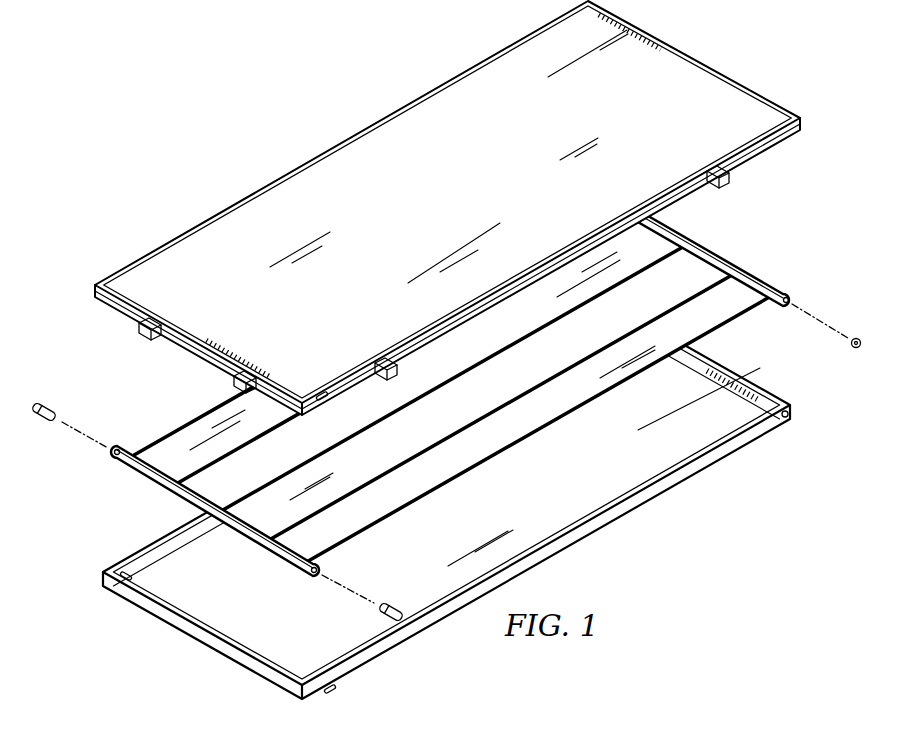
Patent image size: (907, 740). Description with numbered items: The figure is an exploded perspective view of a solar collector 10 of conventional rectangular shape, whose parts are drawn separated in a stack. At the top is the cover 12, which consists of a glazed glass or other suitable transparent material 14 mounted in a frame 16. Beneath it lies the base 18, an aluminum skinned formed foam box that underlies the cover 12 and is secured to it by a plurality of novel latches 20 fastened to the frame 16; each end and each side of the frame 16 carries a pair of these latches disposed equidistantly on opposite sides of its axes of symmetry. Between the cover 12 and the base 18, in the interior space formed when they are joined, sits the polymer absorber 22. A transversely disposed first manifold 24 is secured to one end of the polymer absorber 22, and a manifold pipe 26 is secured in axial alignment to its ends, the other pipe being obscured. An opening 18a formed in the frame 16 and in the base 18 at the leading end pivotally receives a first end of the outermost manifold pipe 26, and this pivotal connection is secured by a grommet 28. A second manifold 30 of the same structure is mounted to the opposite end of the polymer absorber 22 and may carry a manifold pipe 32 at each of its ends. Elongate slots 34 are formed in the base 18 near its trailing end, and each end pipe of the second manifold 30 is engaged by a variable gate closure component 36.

The solar collector 10 is at (289, 104).
The cover 12 is at (251, 192).
The transparent material 14 is at (451, 214).
The frame 16 is at (768, 152).
The base 18 is at (640, 512).
The opening 18a is at (788, 413).
The latches 20 is at (728, 180).
The polymer absorber 22 is at (712, 328).
The first manifold 24 is at (708, 246).
The manifold pipe 26 is at (790, 298).
The grommet 28 is at (860, 338).
The second manifold 30 is at (155, 482).
The manifold pipe 32 is at (112, 453).
The elongate slots 34 is at (326, 399).
The variable gate closure component 36 is at (56, 405).